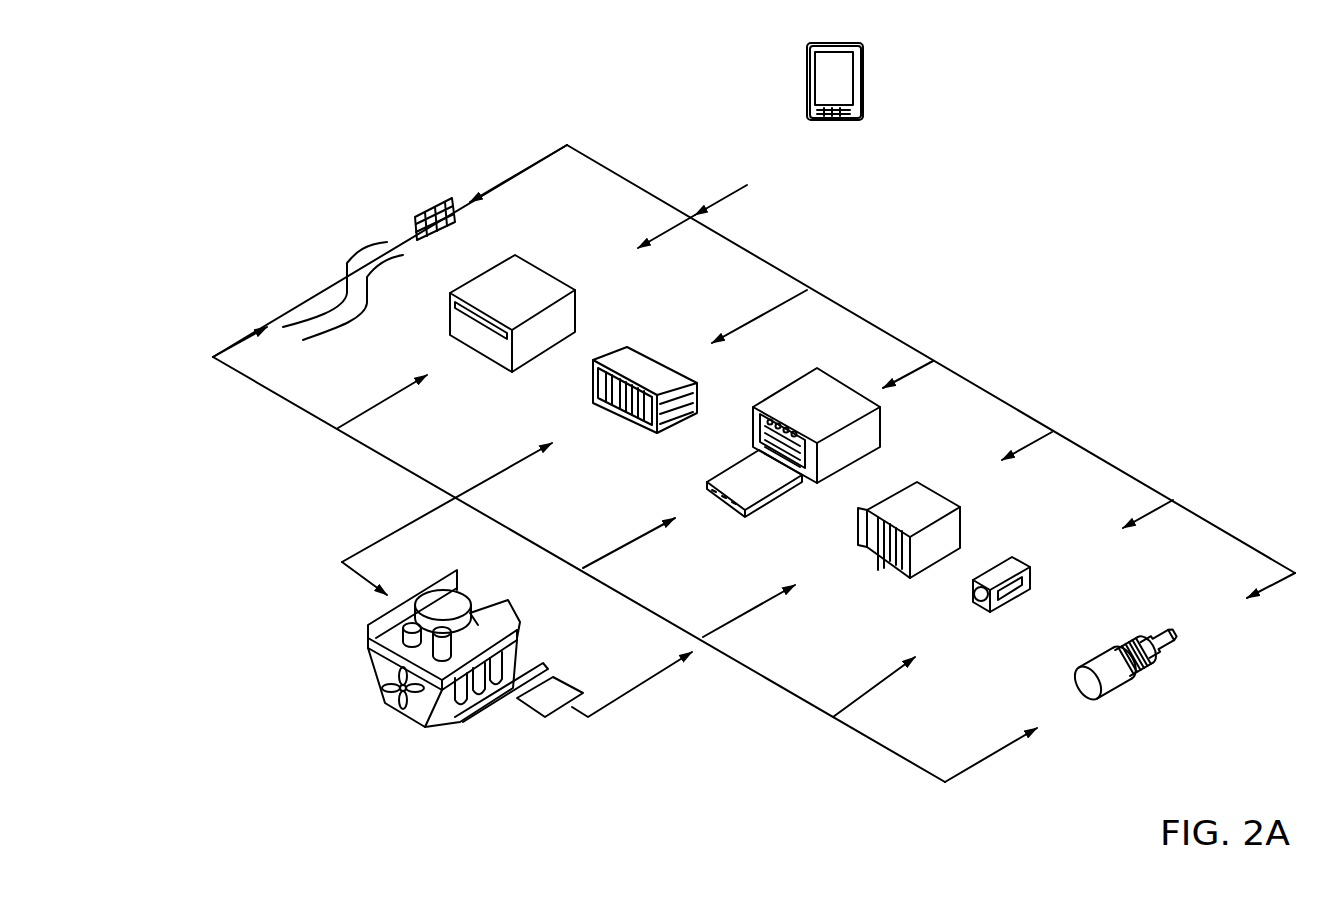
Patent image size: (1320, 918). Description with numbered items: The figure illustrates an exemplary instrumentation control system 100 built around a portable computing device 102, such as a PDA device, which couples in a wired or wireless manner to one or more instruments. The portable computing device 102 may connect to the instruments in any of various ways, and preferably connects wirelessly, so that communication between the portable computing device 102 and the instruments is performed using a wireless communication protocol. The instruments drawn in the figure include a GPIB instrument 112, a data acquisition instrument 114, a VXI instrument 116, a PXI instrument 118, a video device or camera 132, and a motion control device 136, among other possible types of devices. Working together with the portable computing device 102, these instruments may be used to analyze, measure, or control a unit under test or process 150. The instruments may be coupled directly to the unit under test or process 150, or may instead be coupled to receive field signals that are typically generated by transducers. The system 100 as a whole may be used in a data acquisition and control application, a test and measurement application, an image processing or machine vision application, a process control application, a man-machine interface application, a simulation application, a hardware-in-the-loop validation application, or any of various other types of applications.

The instrumentation control system 100 is at (1153, 108).
The portable computing device 102 is at (786, 145).
The GPIB instrument 112 is at (502, 283).
The data acquisition instrument 114 is at (962, 500).
The VXI instrument 116 is at (808, 400).
The PXI instrument 118 is at (628, 360).
The video device or camera 132 is at (1030, 615).
The motion control device 136 is at (1113, 687).
The unit under test or process 150 is at (382, 658).